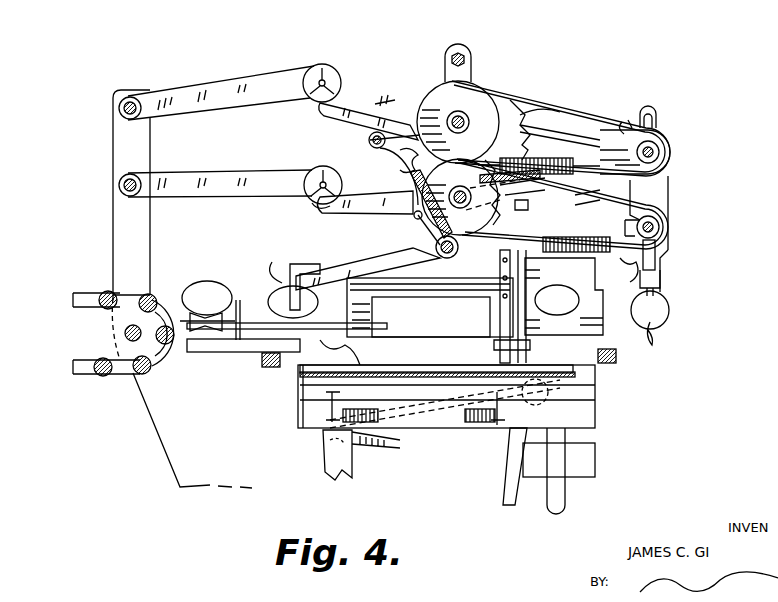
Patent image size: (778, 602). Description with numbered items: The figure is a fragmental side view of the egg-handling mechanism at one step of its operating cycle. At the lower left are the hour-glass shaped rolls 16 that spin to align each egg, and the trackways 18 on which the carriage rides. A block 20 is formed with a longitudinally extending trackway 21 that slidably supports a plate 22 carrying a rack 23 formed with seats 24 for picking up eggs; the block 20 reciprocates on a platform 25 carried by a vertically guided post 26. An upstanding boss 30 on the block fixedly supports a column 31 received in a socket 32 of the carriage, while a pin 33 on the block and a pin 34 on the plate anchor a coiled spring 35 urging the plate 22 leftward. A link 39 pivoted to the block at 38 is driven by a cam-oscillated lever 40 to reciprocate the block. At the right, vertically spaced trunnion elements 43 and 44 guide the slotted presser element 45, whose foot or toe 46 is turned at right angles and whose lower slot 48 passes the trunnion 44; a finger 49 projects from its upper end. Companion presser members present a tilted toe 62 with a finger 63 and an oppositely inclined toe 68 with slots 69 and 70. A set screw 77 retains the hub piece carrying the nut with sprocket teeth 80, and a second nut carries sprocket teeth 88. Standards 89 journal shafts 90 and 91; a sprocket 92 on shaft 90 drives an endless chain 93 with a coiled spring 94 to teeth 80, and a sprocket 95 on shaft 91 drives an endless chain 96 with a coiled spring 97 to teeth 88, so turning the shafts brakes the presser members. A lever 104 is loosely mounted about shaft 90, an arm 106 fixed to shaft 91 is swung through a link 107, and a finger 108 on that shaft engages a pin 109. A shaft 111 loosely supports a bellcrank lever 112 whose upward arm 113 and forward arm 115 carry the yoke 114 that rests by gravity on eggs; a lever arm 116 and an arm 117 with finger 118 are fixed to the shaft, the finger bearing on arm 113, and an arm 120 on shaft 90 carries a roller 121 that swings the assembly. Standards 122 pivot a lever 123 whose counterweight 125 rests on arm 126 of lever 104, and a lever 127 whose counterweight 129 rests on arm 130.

The diabolo or hour-glass shaped rolls 16 is at (237, 318).
The trackways 18 is at (581, 301).
The block 20 is at (467, 368).
The trackway 21 is at (576, 372).
The plate 22 is at (390, 370).
The rack 23 is at (297, 374).
The seats 24 is at (225, 350).
The platform 25 is at (597, 418).
The post 26 is at (567, 497).
The upstanding boss 30 is at (468, 330).
The column 31 is at (498, 326).
The socket 32 is at (498, 302).
The pin 33 is at (330, 412).
The pin 34 is at (494, 427).
The coiled spring 35 is at (462, 426).
The pivotal connection 38 is at (455, 403).
The link 39 is at (380, 438).
The lever 40 is at (353, 466).
The trunnion element 43 is at (660, 152).
The trunnion element 44 is at (660, 225).
The presser element 45 is at (660, 270).
The foot or toe 46 is at (671, 306).
The lower slot 48 is at (664, 284).
The finger 49 is at (625, 120).
The toe 62 is at (664, 254).
The finger 63 is at (618, 165).
The toe 68 is at (630, 272).
The slot 69 is at (658, 112).
The slot 70 is at (660, 198).
The set screw 77 is at (611, 80).
The sprocket teeth 80 is at (664, 140).
The sprocket teeth 88 is at (666, 233).
The standards 89 is at (470, 72).
The shaft 90 is at (470, 116).
The shaft 91 is at (465, 208).
The sprocket 92 is at (440, 92).
The endless chain 93 is at (530, 113).
The coiled spring 94 is at (539, 158).
The sprocket 95 is at (425, 168).
The endless chain 96 is at (588, 200).
The coiled spring 97 is at (562, 205).
The lever 104 is at (520, 103).
The arm 106 is at (565, 125).
The link 107 is at (506, 493).
The finger 108 is at (507, 205).
The pin 109 is at (535, 198).
The shaft 111 is at (440, 256).
The bellcrank lever 112 is at (420, 240).
The arm 113 is at (412, 198).
The yoke 114 is at (292, 281).
The arm 115 is at (333, 264).
The lever arm 116 is at (410, 185).
The arm 117 is at (412, 222).
The finger 118 is at (411, 212).
The arm 120 is at (380, 131).
The pin or roller 121 is at (380, 148).
The standards 122 is at (140, 245).
The lever 123 is at (252, 95).
The counterweight 125 is at (334, 76).
The arm 126 is at (386, 110).
The lever 127 is at (246, 188).
The counterweight 129 is at (320, 172).
The arm 130 is at (322, 206).